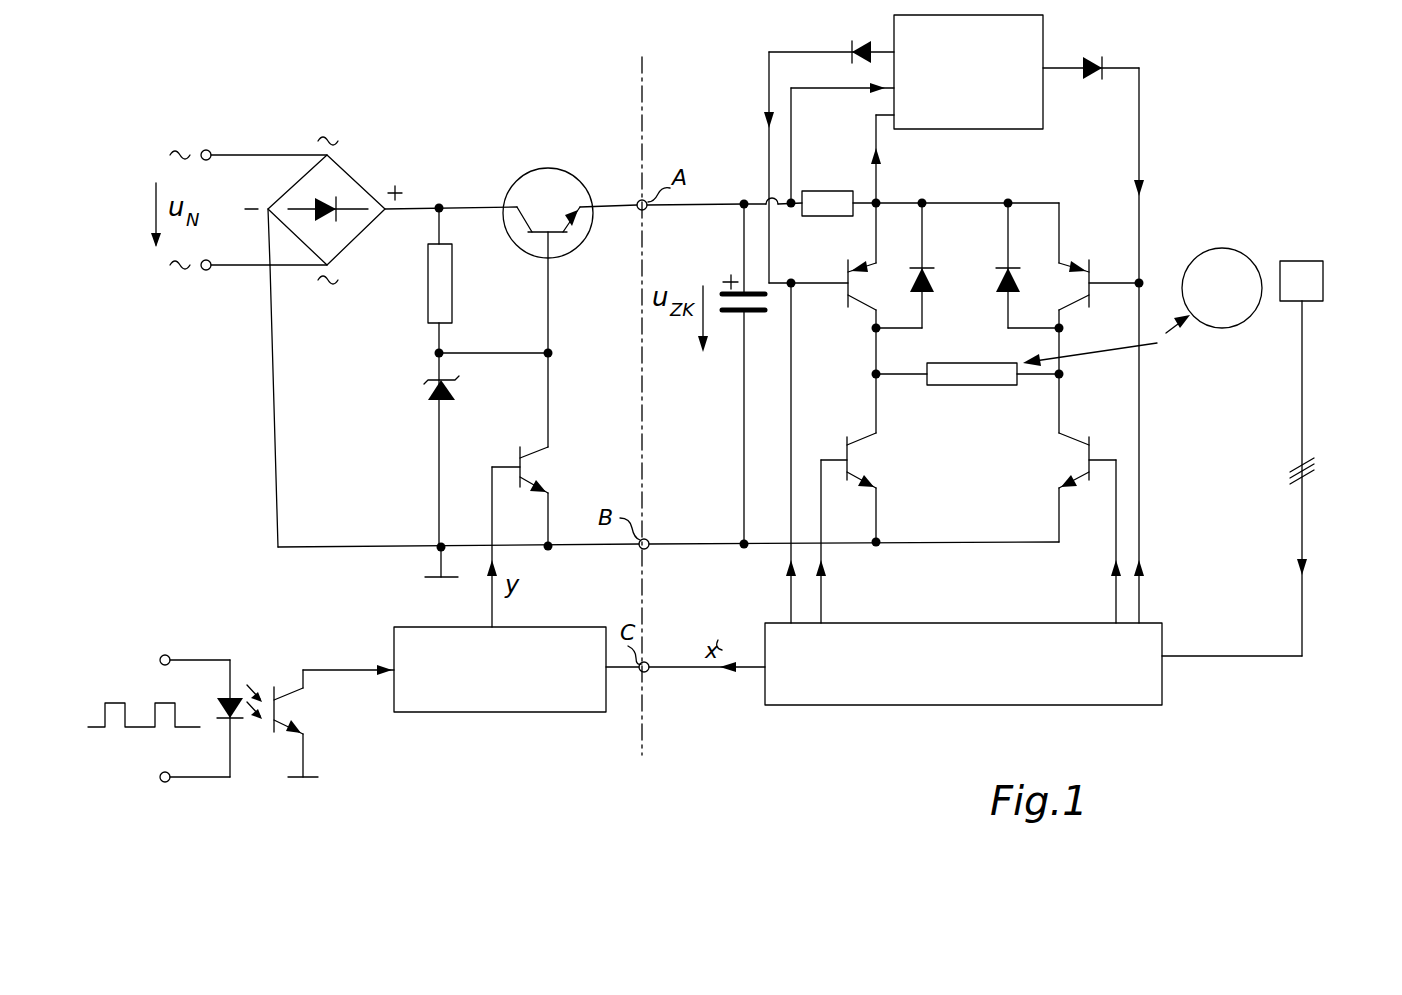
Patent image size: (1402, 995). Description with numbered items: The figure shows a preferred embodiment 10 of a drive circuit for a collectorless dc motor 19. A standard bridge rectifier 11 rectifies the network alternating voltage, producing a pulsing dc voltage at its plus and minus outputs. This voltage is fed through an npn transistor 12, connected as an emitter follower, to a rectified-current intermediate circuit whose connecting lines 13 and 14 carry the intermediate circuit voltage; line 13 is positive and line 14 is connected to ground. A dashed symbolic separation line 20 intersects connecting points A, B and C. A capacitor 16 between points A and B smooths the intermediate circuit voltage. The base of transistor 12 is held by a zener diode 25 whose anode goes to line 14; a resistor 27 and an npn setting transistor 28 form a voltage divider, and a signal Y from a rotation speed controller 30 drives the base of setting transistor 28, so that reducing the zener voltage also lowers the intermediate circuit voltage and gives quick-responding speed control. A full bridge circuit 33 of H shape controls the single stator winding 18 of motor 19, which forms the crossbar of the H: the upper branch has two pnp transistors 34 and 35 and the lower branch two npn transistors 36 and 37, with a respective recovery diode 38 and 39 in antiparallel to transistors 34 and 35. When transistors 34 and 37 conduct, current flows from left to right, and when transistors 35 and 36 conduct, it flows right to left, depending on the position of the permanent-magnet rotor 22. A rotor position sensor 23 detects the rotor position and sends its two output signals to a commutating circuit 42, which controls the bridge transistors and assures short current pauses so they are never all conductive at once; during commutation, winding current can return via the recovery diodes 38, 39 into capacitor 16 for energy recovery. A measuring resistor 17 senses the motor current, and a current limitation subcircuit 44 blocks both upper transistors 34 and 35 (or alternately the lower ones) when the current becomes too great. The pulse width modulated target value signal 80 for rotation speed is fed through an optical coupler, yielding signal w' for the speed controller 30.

The preferred embodiment 10 is at (560, 111).
The bridge rectifier 11 is at (341, 167).
The transistor 12 is at (554, 182).
The connecting line 13 is at (706, 207).
The connecting line 14 is at (704, 540).
The capacitor 16 is at (758, 316).
The measuring resistor 17 is at (824, 194).
The stator winding 18 is at (990, 388).
The collectorless dc motor 19 is at (1190, 370).
The separation line 20 is at (643, 100).
The permanent-magnet rotor 22 is at (1237, 261).
The rotor position sensor 23 is at (1310, 282).
The zener diode 25 is at (430, 388).
The resistor 27 is at (439, 297).
The setting transistor 28 is at (517, 454).
The rotation speed controller 30 is at (516, 681).
The full bridge circuit 33 is at (985, 334).
The PNP transistor 34 is at (854, 309).
The PNP transistor 35 is at (1092, 268).
The NPN transistor 36 is at (846, 448).
The NPN transistor 37 is at (1092, 446).
The recovery diode 38 is at (933, 272).
The recovery diode 39 is at (1014, 274).
The commutating circuit 42 is at (1000, 681).
The current limitation subcircuit 44 is at (1036, 31).
The target value signal 80 is at (142, 730).